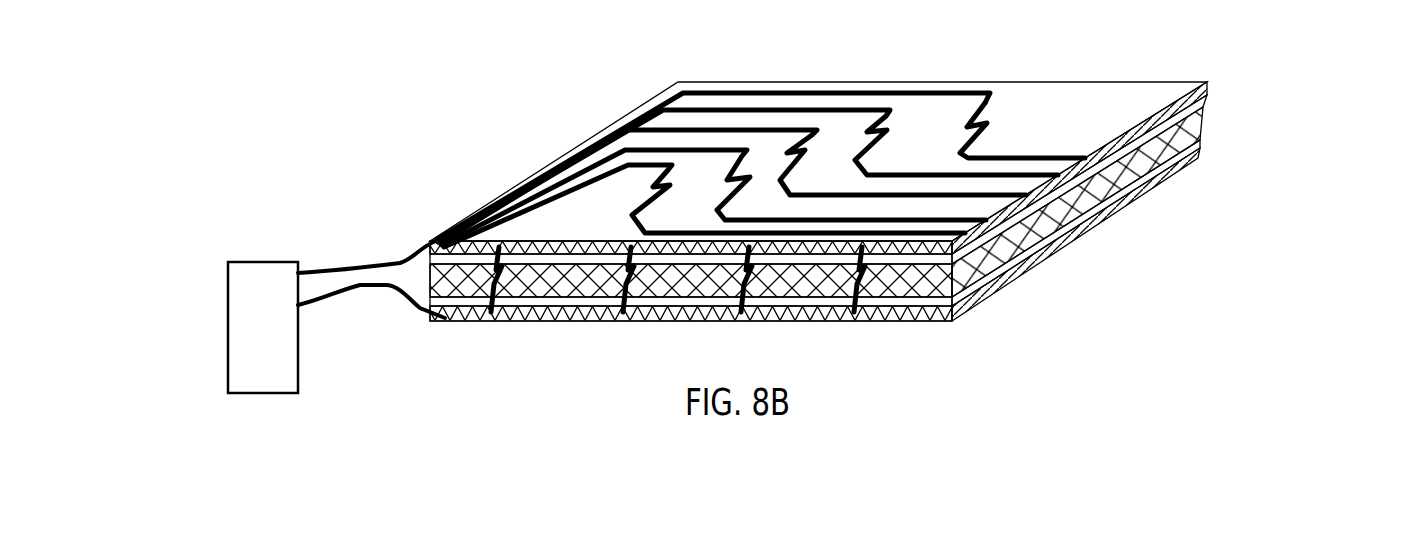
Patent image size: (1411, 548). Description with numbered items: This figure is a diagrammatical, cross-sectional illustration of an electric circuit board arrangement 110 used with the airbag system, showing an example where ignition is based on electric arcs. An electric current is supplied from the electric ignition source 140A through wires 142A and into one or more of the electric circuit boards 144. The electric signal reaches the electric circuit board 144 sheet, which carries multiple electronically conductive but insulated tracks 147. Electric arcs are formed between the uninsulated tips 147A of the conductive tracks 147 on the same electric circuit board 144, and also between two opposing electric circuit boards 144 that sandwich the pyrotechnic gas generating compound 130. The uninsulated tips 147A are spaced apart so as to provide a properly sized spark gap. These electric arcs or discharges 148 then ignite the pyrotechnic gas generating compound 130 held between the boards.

The thermal sensing assembly 110 is at (733, 231).
The pyrotechnic gas generating compound 130 is at (1110, 213).
The electric circuit board 144 is at (1190, 170).
The electronically conductive tracks 147 is at (797, 92).
The uninsulated tips 147A is at (987, 98).
The electric arcs or discharges 148 is at (990, 123).
The wires 142A is at (387, 287).
The electric ignition source 140A is at (255, 337).